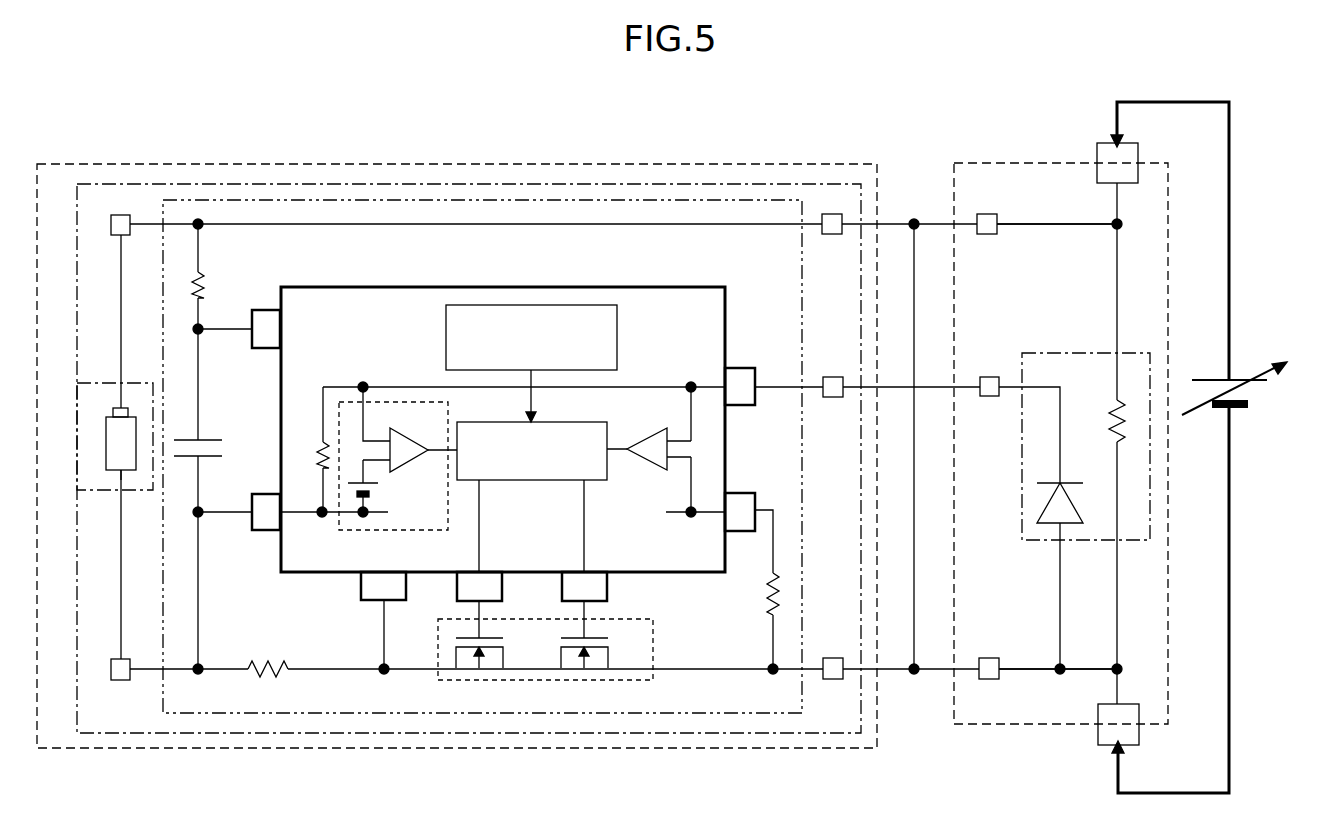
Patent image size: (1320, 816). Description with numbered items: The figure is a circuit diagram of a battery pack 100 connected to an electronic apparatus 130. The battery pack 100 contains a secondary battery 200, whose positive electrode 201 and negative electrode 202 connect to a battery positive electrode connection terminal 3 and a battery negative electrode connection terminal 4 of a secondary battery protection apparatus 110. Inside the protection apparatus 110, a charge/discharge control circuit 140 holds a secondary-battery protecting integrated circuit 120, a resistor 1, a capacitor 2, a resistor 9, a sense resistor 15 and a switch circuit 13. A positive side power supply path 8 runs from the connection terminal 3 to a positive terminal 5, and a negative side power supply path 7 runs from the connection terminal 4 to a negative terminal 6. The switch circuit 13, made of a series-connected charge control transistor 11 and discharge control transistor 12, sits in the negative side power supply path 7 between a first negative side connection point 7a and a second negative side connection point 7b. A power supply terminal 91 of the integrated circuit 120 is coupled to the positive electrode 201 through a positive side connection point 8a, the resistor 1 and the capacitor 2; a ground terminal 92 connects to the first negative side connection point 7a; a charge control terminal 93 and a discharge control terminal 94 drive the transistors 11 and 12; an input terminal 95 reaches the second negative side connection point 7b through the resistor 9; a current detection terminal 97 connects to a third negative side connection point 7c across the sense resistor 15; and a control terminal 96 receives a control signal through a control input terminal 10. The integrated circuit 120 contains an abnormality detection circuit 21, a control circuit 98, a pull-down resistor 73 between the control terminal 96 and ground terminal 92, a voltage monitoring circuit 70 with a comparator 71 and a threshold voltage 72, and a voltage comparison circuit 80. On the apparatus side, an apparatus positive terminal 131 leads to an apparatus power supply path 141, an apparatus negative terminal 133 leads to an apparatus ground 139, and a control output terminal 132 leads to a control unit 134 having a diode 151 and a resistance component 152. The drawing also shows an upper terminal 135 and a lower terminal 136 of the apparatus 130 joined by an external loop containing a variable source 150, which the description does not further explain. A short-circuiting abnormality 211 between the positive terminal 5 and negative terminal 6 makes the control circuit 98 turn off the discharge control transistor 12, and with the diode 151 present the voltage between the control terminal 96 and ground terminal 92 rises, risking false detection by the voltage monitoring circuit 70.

The resistor 1 is at (196, 270).
The capacitor 2 is at (207, 437).
The battery positive electrode connection terminal 3 is at (120, 237).
The battery negative electrode connection terminal 4 is at (120, 657).
The positive terminal 5 is at (832, 236).
The negative terminal 6 is at (832, 656).
The negative side power supply path 7 is at (322, 662).
The first negative side connection point 7a is at (204, 675).
The second negative side connection point 7b is at (766, 675).
The third negative side connection point 7c is at (390, 675).
The positive side power supply path 8 is at (272, 228).
The positive side connection point 8a is at (204, 230).
The resistor 9 is at (770, 610).
The control input terminal 10 is at (833, 398).
The charge control transistor 11 is at (610, 650).
The discharge control transistor 12 is at (505, 650).
The switch circuit 13 is at (655, 641).
The sense resistor 15 is at (268, 660).
The abnormality detection circuit 21 is at (619, 330).
The voltage monitoring circuit 70 is at (415, 535).
The comparator 71 is at (410, 460).
The threshold voltage 72 is at (378, 492).
The pull-down resistor 73 is at (320, 440).
The voltage comparison circuit 80 is at (652, 472).
The power supply terminal 91 is at (263, 308).
The ground terminal 92 is at (263, 492).
The charge control terminal 93 is at (609, 586).
The discharge control terminal 94 is at (504, 586).
The input terminal 95 is at (738, 491).
The control terminal 96 is at (740, 366).
The current detection terminal 97 is at (359, 586).
The control circuit 98 is at (528, 481).
The battery pack 100 is at (452, 163).
The secondary battery protection apparatus 110 is at (640, 200).
The secondary-battery protecting integrated circuit 120 is at (615, 287).
The electronic apparatus 130 is at (972, 163).
The apparatus positive terminal 131 is at (988, 236).
The control output terminal 132 is at (988, 398).
The apparatus negative terminal 133 is at (989, 656).
The control unit 134 is at (1052, 353).
The positive terminal 135 is at (1098, 147).
The negative terminal 136 is at (1097, 704).
The apparatus ground 139 is at (1032, 665).
The charge/discharge control circuit 140 is at (554, 184).
The apparatus power supply path 141 is at (1040, 228).
The variable power source 150 is at (1202, 375).
The diode 151 is at (1065, 480).
The resistance component 152 is at (1112, 398).
The secondary battery 200 is at (106, 441).
The positive electrode 201 is at (113, 412).
The negative electrode 202 is at (121, 472).
The short-circuiting abnormality 211 is at (916, 322).